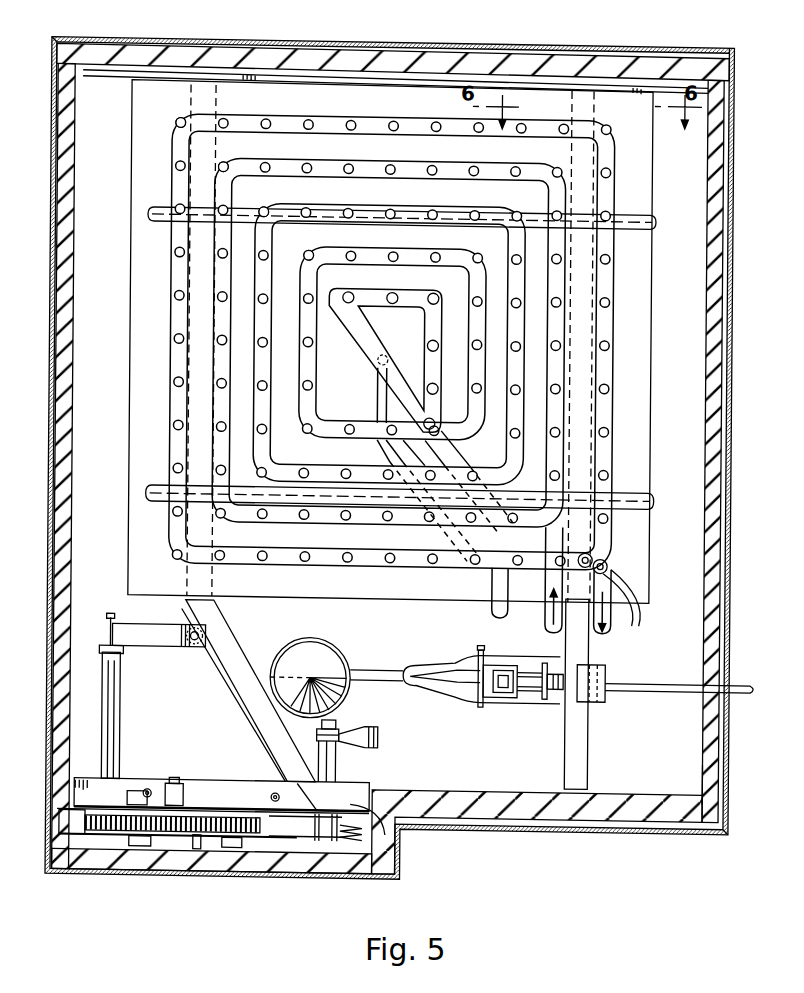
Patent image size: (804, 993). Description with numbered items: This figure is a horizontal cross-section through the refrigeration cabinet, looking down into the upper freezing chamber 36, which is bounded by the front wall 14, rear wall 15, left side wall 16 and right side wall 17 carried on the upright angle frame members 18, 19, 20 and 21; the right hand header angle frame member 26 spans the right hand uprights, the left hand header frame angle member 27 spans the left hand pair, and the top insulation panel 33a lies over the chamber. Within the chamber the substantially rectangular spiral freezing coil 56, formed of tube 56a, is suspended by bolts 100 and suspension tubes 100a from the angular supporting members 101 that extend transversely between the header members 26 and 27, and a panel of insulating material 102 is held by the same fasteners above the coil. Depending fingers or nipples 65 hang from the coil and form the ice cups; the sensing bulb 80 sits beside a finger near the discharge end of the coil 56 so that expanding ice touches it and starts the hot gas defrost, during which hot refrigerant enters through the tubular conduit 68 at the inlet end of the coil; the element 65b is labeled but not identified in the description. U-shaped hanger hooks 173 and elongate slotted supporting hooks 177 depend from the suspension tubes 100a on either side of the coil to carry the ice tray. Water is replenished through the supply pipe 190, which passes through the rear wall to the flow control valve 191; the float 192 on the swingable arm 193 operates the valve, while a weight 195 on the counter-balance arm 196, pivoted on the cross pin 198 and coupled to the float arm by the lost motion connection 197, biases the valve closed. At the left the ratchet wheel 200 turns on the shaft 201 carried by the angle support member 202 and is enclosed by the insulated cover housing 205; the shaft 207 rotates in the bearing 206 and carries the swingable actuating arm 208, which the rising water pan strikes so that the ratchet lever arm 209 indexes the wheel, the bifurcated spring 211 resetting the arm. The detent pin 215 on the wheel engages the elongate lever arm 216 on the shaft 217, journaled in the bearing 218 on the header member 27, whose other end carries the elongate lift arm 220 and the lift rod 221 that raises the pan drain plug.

The front wall 14 is at (47, 480).
The rear wall 15 is at (728, 518).
The left side wall 16 is at (495, 828).
The right side wall 17 is at (328, 48).
The upright angle frame member 18 is at (58, 795).
The upright angle frame member 19 is at (84, 52).
The upright angle frame member 20 is at (733, 54).
The upright angle frame member 21 is at (731, 802).
The right hand upper header angle frame member 26 is at (657, 78).
The left hand upper header frame angle member 27 is at (680, 818).
The top insulation panel 33a is at (698, 773).
The upper freezing chamber 36 is at (90, 355).
The evaporator cooling or freezing coil 56 is at (617, 329).
The tube of evaporator coil 56a is at (428, 362).
The depending fingers or nipples 65 is at (258, 380).
The outlet tube 65b is at (608, 561).
The conductor tube or tubular conduit 68 is at (376, 385).
The sensing bulb or element 80 is at (593, 554).
The bolts 100 is at (590, 202).
The suspension tubes 100a is at (650, 214).
The angular supporting members 101 is at (228, 681).
The panel of insulating material 102 is at (633, 358).
The U-shaped hanger hooks 173 is at (148, 503).
The elongate slotted supporting hooks 177 is at (148, 219).
The water supply pipe 190 is at (688, 660).
The flow control valve 191 is at (557, 690).
The float 192 is at (316, 644).
The swingable float arm 193 is at (393, 655).
The weight 195 is at (602, 669).
The counter-balance arm 196 is at (499, 703).
The open loop lost motion connection 197 is at (409, 691).
The cross pin 198 is at (484, 652).
The ratchet wheel 200 is at (216, 832).
The shaft 201 is at (178, 785).
The angle support member 202 is at (213, 785).
The insulated cover housing 205 is at (112, 866).
The bearing 206 is at (340, 770).
The shaft 207 is at (338, 726).
The swingable actuating arm 208 is at (380, 742).
The ratchet lever arm 209 is at (294, 840).
The bifurcated spring 211 is at (350, 838).
The detent pin 215 is at (202, 854).
The elongate lever arm 216 is at (145, 862).
The shaft 217 is at (113, 628).
The bearing 218 is at (121, 686).
The elongate lift arm 220 is at (163, 632).
The lift rod 221 is at (200, 641).